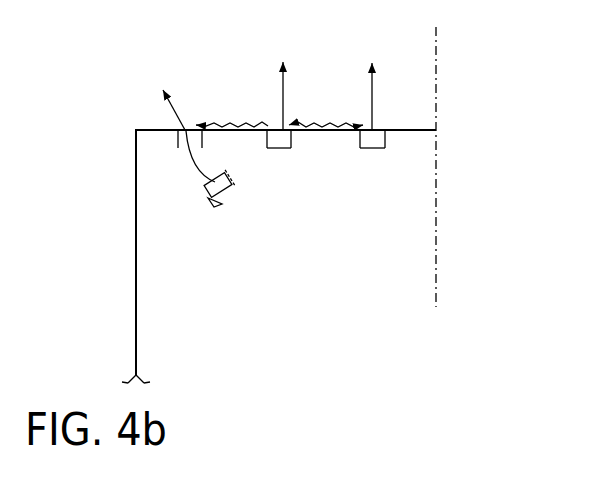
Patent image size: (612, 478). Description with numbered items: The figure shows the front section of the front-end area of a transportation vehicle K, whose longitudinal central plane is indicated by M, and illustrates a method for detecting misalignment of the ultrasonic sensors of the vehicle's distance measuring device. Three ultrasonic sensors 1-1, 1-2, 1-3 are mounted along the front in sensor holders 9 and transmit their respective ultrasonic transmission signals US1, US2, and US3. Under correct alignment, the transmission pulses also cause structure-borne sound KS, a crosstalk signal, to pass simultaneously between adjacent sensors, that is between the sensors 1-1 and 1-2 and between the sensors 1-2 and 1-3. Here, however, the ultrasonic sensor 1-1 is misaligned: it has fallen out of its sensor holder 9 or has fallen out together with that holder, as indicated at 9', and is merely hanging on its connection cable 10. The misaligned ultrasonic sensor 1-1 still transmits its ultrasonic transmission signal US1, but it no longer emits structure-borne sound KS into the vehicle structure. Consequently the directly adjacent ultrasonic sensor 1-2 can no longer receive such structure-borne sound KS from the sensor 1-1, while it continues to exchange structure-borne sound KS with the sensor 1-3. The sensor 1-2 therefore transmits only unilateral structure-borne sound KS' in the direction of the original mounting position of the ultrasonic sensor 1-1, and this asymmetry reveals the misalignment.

The transportation vehicle K is at (136, 342).
The longitudinal central plane M is at (436, 267).
The ultrasonic transmission signal US1 is at (178, 118).
The ultrasonic transmission signal US2 is at (283, 90).
The ultrasonic transmission signal US3 is at (372, 98).
The structure-borne sound KS is at (326, 79).
The unilateral structure-borne sound KS' is at (205, 79).
The sensor holder 9 is at (292, 169).
The fallen-out sensor holder 9' is at (151, 236).
The connection cable 10 is at (187, 160).
The ultrasonic sensor 1-1 is at (217, 188).
The ultrasonic sensor 1-2 is at (280, 147).
The ultrasonic sensor 1-3 is at (372, 147).